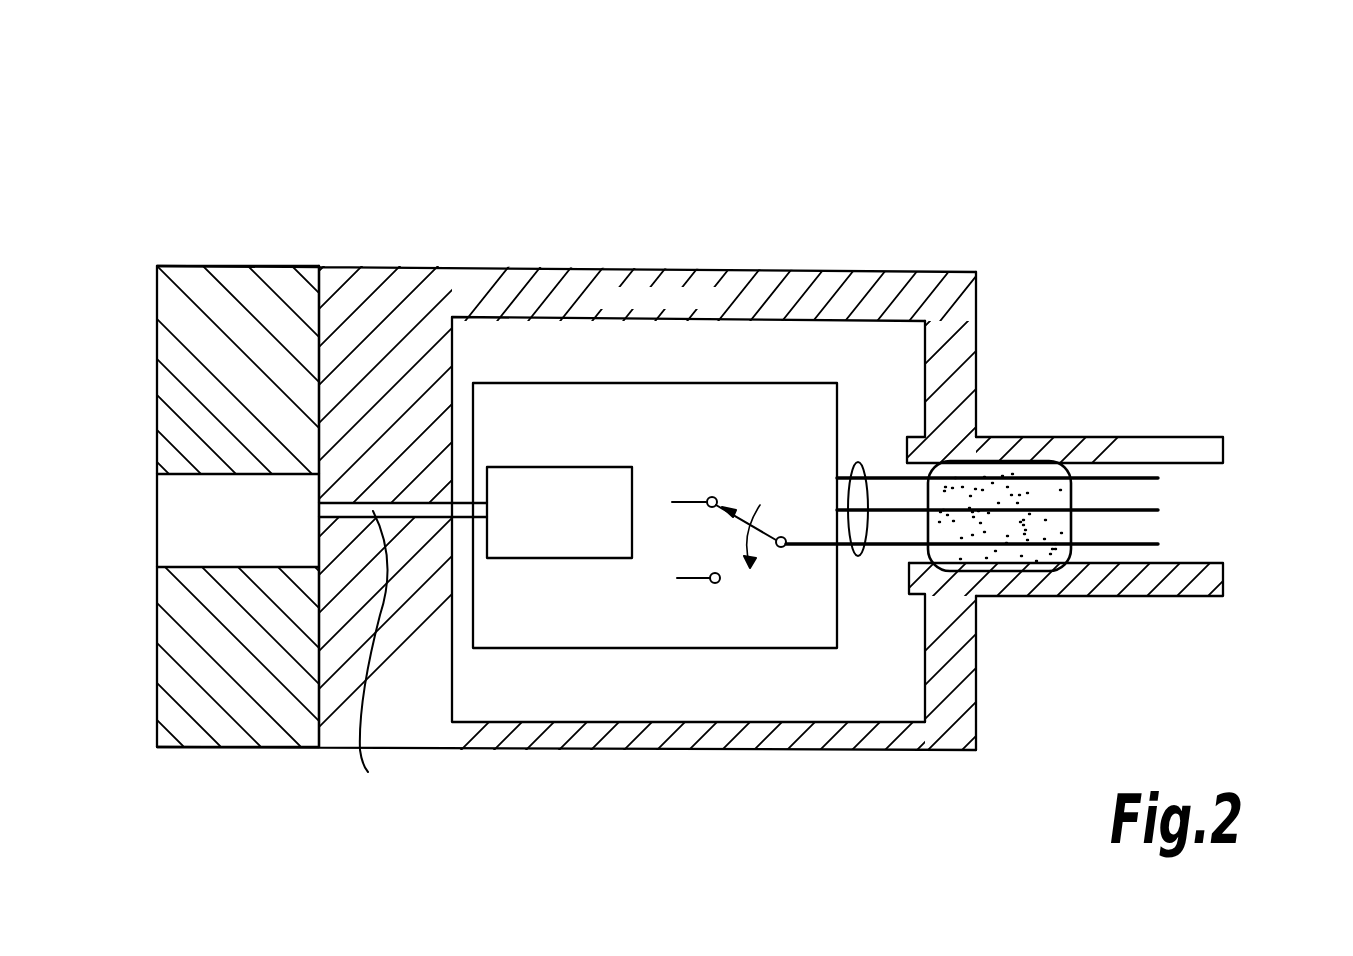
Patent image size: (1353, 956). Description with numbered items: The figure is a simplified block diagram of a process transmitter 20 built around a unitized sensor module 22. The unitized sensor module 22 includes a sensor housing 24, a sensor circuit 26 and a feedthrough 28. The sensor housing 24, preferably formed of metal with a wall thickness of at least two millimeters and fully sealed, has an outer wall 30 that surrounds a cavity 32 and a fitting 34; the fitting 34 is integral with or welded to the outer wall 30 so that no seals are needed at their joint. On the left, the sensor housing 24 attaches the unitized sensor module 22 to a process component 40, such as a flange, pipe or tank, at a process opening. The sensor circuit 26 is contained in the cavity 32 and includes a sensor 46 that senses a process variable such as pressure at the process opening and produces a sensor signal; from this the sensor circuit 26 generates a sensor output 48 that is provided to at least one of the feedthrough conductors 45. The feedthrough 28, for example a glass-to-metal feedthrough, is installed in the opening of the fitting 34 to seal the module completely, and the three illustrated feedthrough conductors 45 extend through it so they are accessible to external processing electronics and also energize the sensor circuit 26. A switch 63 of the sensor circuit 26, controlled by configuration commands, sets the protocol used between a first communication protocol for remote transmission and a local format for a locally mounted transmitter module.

The process transmitter 20 is at (676, 444).
The unitized sensor module 22 is at (676, 444).
The sensor housing 24 is at (377, 267).
The sensor circuit 26 is at (562, 649).
The feedthrough 28 is at (995, 492).
The outer wall 30 is at (705, 270).
The cavity 32 is at (832, 335).
The fitting 34 is at (1148, 597).
The process component 40 is at (245, 748).
The feedthrough conductors 45 is at (857, 459).
The sensor 46 is at (545, 467).
The sensor output 48 is at (877, 548).
The switch 63 is at (726, 458).